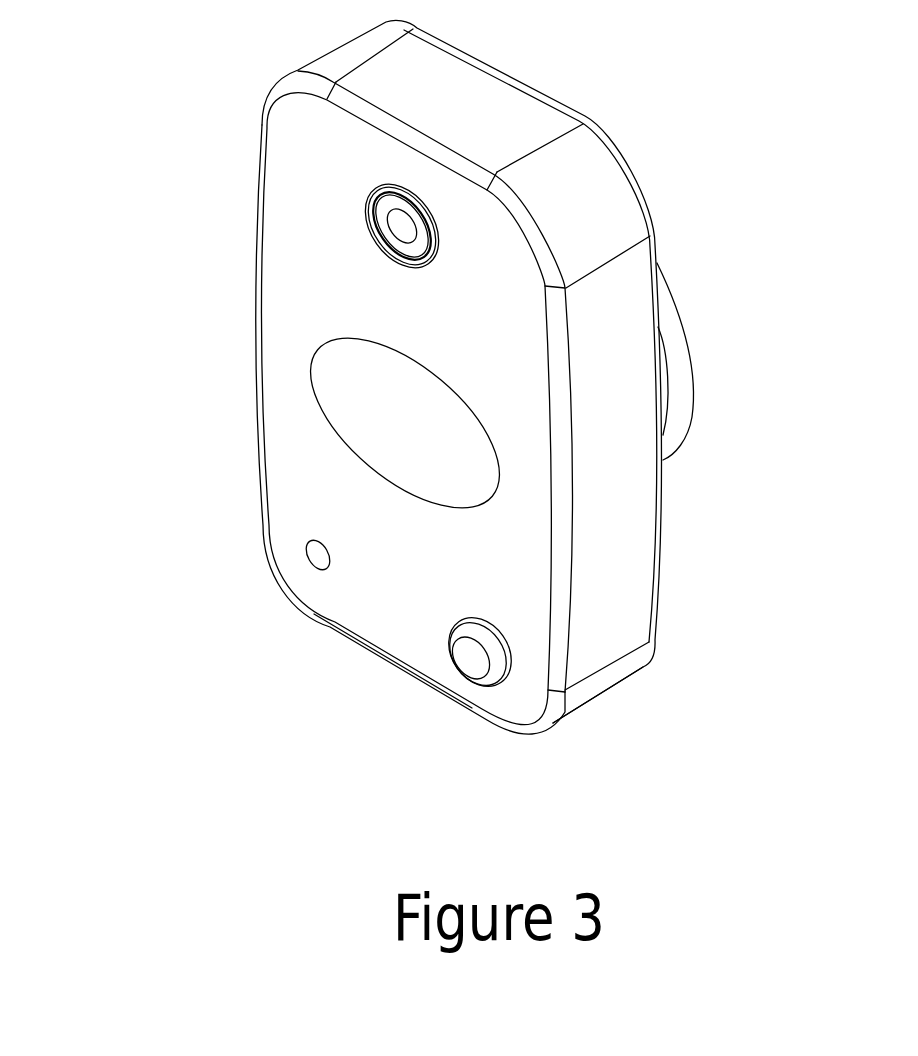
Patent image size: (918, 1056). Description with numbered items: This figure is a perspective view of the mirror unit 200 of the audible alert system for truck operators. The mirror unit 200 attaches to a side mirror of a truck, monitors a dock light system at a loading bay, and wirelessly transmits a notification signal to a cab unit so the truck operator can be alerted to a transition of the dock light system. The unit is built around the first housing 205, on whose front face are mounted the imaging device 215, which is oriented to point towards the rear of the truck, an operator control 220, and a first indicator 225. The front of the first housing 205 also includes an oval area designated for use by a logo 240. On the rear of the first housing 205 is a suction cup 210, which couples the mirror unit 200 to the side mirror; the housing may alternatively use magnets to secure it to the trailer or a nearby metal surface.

The mirror unit 200 is at (413, 401).
The first housing 205 is at (613, 617).
The suction cup 210 is at (683, 347).
The imaging device 215 is at (418, 203).
The operator control 220 is at (470, 663).
The first indicator 225 is at (317, 553).
The logo 240 is at (349, 406).